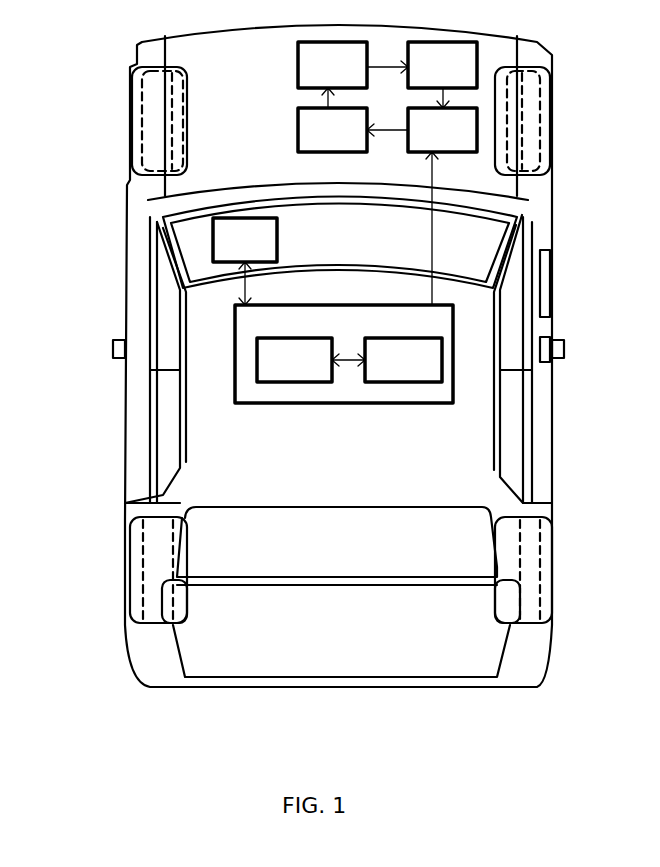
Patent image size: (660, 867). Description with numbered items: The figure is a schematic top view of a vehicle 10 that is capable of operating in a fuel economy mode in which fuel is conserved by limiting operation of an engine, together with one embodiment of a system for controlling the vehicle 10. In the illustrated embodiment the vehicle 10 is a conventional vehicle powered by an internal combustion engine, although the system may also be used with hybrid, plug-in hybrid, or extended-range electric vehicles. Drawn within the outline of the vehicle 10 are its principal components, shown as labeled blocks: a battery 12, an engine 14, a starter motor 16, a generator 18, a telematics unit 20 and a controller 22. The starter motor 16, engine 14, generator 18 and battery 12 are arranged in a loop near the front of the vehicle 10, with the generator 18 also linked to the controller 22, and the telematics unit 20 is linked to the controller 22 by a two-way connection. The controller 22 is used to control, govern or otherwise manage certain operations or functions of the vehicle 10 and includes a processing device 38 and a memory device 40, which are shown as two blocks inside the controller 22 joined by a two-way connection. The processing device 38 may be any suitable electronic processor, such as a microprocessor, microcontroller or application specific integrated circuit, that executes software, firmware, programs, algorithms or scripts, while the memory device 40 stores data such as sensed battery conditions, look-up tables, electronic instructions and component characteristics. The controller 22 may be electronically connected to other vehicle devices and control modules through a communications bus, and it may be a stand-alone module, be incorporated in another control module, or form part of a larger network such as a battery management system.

The vehicle 10 is at (223, 468).
The battery 12 is at (332, 130).
The engine 14 is at (442, 65).
The starter motor 16 is at (332, 65).
The generator 18 is at (442, 130).
The telematics unit 20 is at (245, 240).
The controller 22 is at (443, 393).
The processing device 38 is at (294, 360).
The memory device 40 is at (403, 360).